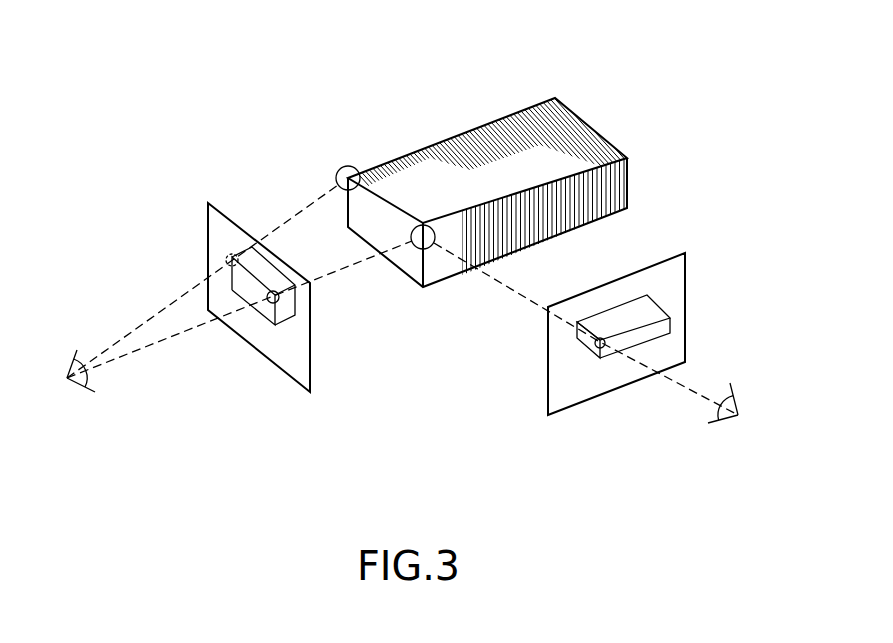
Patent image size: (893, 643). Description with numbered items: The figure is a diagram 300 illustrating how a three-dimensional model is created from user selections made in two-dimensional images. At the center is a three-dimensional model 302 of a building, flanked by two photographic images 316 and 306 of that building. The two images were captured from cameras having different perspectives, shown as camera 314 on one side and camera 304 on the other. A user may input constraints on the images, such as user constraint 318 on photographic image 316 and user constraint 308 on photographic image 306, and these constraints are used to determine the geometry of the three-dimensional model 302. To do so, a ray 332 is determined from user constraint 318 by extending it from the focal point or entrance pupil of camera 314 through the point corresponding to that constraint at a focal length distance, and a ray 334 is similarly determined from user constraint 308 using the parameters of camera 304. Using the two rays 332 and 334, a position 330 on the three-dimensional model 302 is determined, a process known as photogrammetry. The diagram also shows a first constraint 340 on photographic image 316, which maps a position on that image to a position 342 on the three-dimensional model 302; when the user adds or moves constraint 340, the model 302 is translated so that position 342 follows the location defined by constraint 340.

The diagram 300 is at (683, 34).
The three-dimensional model 302 is at (473, 128).
The camera 304 is at (730, 383).
The photographic image 306 is at (690, 283).
The user constraint 308 is at (587, 350).
The camera 314 is at (67, 378).
The photographic image 316 is at (208, 208).
The user constraint 318 is at (278, 301).
The position 330 is at (425, 225).
The ray 332 is at (173, 337).
The ray 334 is at (513, 292).
The first constraint 340 is at (232, 254).
The position 342 is at (348, 165).